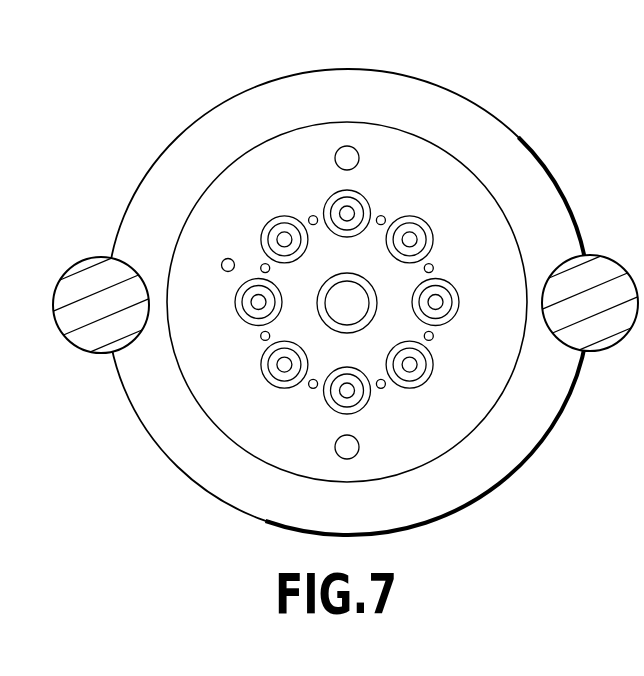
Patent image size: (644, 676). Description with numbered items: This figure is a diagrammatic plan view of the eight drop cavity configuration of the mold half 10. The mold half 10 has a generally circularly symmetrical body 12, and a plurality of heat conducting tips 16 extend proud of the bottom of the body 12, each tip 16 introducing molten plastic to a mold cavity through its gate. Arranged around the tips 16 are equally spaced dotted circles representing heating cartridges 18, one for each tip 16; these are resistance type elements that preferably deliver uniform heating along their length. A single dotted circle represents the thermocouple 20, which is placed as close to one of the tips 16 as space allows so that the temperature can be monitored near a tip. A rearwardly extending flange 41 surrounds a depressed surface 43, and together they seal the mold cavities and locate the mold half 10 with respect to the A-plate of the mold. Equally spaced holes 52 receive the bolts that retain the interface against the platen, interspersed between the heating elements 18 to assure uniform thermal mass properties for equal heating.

The mold half 10 is at (485, 49).
The body 12 is at (375, 69).
The heat conducting tips 16 is at (414, 239).
The heating cartridges 18 is at (385, 216).
The thermocouple 20 is at (230, 258).
The flange 41 is at (530, 187).
The depressed surface 43 is at (492, 385).
The holes 52 is at (359, 309).